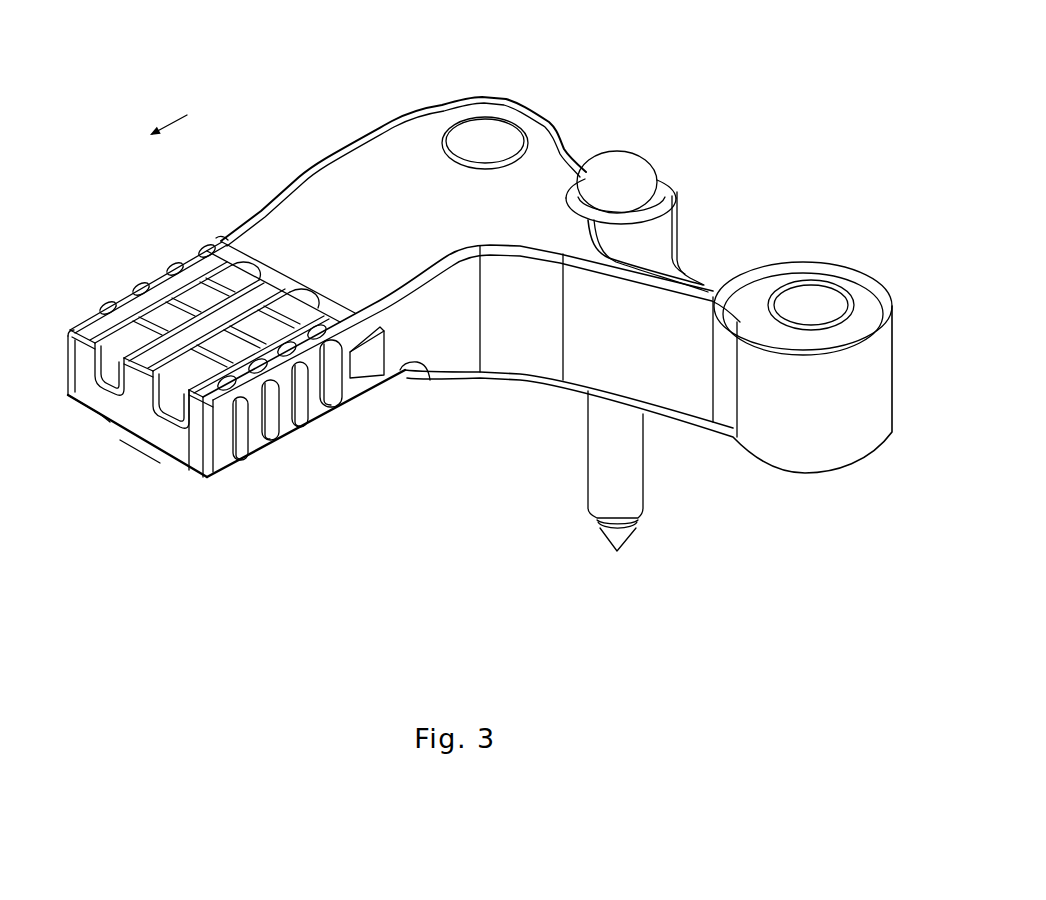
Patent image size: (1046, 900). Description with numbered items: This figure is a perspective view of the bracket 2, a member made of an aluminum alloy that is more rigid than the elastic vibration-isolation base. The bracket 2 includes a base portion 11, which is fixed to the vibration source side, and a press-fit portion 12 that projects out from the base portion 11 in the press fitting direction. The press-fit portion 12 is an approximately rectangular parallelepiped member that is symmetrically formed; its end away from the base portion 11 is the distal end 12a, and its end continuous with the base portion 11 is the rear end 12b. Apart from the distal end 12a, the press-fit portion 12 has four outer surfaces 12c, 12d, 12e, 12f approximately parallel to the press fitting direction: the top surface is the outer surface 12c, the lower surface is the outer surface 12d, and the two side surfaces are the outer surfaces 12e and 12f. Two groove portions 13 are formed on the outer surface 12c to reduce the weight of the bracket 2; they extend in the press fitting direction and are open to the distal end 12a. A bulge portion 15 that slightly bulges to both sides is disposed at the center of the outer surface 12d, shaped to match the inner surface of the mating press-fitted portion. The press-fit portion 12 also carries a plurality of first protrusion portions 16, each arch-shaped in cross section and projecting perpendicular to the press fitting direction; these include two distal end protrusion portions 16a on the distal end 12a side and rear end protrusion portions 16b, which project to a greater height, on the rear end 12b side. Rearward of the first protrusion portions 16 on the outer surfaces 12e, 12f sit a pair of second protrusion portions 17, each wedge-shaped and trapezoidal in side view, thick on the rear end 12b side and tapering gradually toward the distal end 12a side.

The bracket 2 is at (690, 71).
The base portion 11 is at (528, 357).
The press-fit portion 12 is at (212, 500).
The distal end 12a is at (130, 418).
The rear end 12b is at (268, 237).
The outer surface 12c is at (95, 322).
The outer surface 12d is at (84, 408).
The outer surface 12e is at (69, 348).
The outer surface 12f is at (257, 437).
The groove portion 13 is at (102, 348).
The bulge portion 15 is at (147, 438).
The first protrusion portion 16 is at (390, 477).
The distal end protrusion portion 16a is at (107, 307).
The rear end protrusion portion 16b is at (207, 250).
The second protrusion portion 17 is at (380, 380).